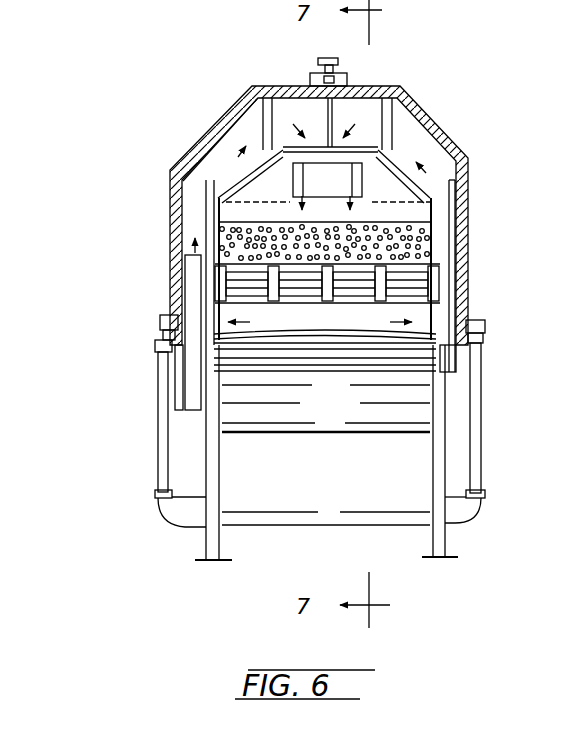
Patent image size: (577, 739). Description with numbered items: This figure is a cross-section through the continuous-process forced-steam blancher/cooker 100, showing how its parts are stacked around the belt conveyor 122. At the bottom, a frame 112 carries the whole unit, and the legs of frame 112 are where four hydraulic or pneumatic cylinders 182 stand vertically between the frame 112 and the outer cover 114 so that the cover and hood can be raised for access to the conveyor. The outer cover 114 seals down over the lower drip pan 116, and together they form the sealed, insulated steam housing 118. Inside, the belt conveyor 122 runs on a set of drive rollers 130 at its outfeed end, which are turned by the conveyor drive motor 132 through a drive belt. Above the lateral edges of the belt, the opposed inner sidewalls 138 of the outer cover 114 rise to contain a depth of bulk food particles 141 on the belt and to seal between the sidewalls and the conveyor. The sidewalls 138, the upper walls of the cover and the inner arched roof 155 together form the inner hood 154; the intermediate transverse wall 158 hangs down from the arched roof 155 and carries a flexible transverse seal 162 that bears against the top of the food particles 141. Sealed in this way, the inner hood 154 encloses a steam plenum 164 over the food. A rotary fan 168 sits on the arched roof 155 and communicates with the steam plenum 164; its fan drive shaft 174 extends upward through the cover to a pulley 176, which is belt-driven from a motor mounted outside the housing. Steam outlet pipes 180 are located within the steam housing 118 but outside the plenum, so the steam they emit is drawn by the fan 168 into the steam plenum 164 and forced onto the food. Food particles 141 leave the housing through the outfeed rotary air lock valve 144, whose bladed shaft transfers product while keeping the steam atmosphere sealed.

The blancher/cooker 100 is at (138, 69).
The frame 112 is at (226, 491).
The outer cover 114 is at (208, 140).
The lower drip pan 116 is at (225, 340).
The steam housing 118 is at (424, 151).
The belt conveyor 122 is at (445, 284).
The drive rollers 130 is at (262, 271).
The conveyor drive motor 132 is at (180, 397).
The inner sidewalls 138 is at (204, 218).
The food particles 141 is at (435, 224).
The outfeed rotary air lock valve 144 is at (356, 415).
The inner hood 154 is at (238, 177).
The inner arched roof 155 is at (212, 135).
The intermediate transverse wall 158 is at (398, 140).
The transverse seal 162 is at (200, 207).
The steam plenum 164 is at (405, 214).
The rotary fan 168 is at (350, 150).
The fan drive shaft 174 is at (328, 145).
The pulley 176 is at (316, 62).
The steam outlet pipes 180 is at (207, 320).
The hydraulic or pneumatic cylinders 182 is at (158, 426).